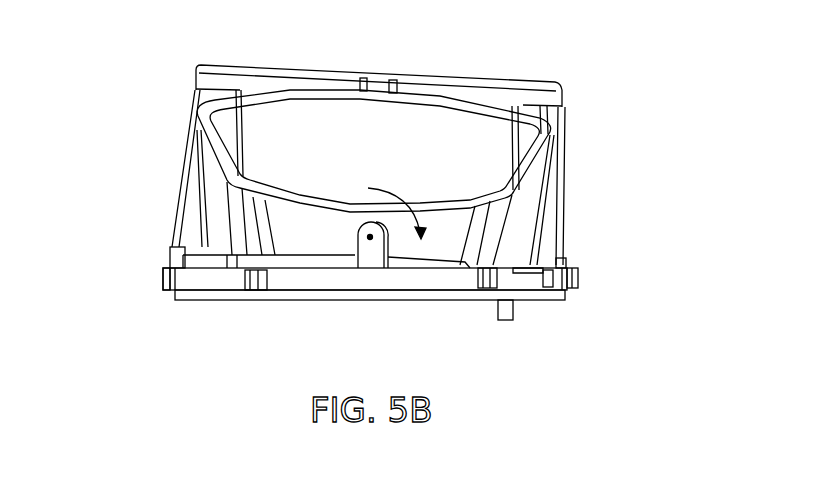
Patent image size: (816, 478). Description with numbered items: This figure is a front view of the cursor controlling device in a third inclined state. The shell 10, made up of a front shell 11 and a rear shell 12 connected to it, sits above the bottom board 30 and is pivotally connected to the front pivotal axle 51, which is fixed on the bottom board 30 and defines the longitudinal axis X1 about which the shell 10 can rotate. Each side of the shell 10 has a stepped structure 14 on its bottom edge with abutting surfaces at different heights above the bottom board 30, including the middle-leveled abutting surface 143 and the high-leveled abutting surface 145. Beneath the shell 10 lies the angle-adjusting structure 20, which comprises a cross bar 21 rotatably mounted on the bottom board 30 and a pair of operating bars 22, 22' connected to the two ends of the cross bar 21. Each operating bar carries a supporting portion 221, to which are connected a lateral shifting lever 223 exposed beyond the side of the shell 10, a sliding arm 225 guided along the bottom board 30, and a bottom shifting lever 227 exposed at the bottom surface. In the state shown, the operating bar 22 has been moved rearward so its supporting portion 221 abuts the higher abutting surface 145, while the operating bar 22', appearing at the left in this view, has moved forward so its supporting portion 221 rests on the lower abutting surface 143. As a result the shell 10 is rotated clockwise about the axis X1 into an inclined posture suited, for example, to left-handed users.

The shell 10 is at (390, 98).
The front shell 11 is at (452, 128).
The rear shell 12 is at (514, 95).
The stepped structure 14 is at (557, 225).
The middle-leveled abutting surface 143 is at (178, 262).
The high-leveled abutting surface 145 is at (570, 264).
The angle-adjusting structure 20 is at (365, 322).
The cross bar 21 is at (456, 280).
The operating bar 22 is at (600, 298).
The operating bar 22' is at (126, 283).
The supporting portion 221 is at (170, 268).
The lateral shifting lever 223 is at (579, 278).
The sliding arm 225 is at (521, 283).
The bottom shifting lever 227 is at (579, 328).
The bottom board 30 is at (269, 305).
The front pivotal axle 51 is at (370, 273).
The longitudinal axis X1 is at (370, 237).